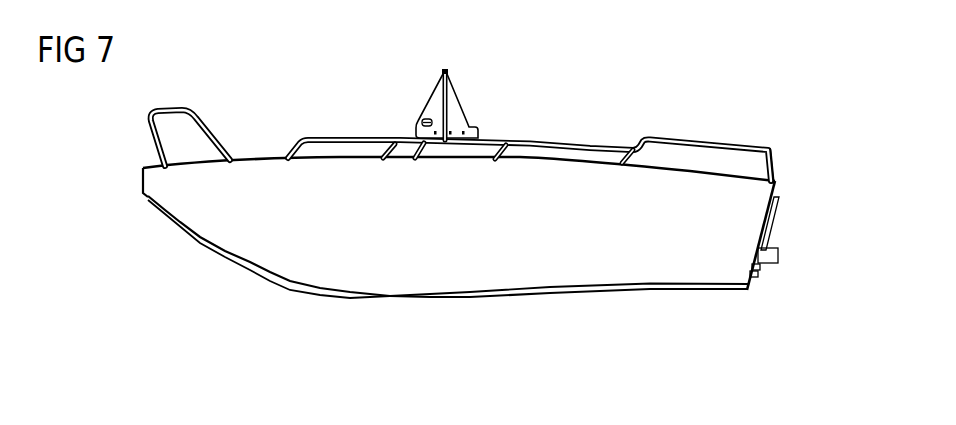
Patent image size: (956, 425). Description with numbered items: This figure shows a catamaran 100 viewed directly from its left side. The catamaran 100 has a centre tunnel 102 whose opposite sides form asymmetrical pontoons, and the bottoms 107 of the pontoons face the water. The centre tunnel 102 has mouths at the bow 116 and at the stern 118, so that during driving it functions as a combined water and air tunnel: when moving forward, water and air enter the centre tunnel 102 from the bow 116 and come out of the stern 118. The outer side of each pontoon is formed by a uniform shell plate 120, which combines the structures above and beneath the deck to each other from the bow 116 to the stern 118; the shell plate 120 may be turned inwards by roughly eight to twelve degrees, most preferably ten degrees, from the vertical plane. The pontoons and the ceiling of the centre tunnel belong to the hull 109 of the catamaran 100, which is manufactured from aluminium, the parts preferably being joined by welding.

The catamaran 100 is at (453, 386).
The centre tunnel 102 is at (168, 280).
The bottoms of the pontoons 107 is at (263, 278).
The hull 109 is at (359, 340).
The bow 116 is at (124, 184).
The stern 118 is at (797, 214).
The shell plate 120 is at (573, 213).